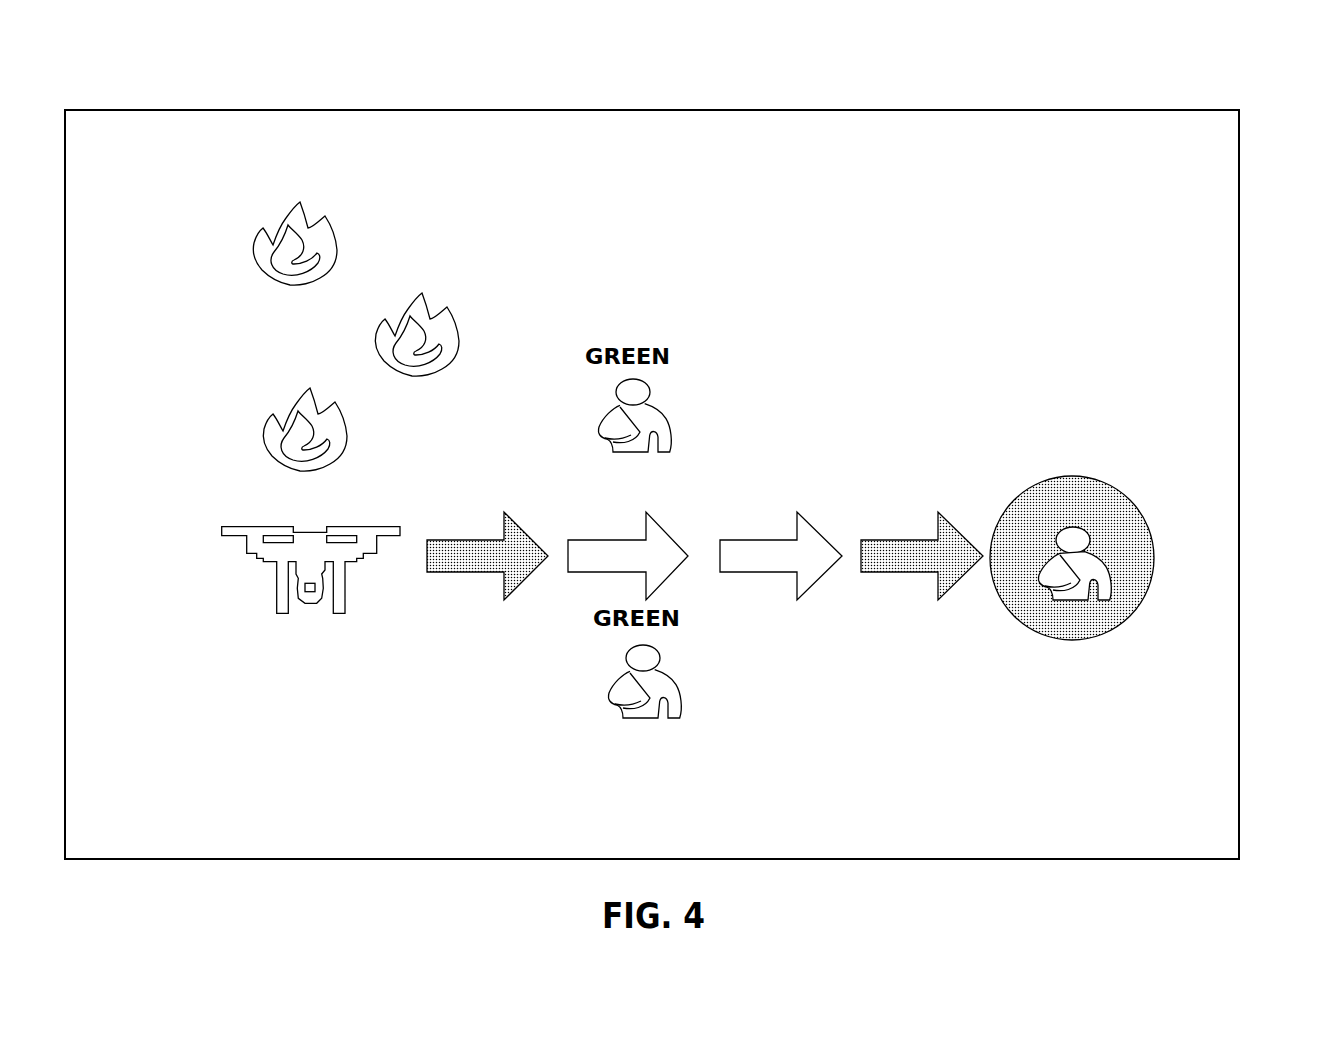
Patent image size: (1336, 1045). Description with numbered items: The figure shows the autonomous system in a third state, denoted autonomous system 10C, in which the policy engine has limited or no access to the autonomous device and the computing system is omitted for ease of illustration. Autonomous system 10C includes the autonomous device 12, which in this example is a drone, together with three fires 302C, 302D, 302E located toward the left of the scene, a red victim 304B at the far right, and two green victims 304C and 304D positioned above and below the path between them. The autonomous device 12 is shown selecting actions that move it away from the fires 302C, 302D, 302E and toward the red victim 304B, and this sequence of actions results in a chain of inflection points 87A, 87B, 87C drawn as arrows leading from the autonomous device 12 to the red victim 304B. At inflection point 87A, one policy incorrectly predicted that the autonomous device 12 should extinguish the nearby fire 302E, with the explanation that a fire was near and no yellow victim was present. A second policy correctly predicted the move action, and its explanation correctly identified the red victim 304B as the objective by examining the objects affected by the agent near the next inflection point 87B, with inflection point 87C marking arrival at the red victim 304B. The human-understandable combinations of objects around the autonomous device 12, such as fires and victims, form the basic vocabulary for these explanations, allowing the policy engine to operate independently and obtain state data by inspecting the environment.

The autonomous system 10C is at (1243, 92).
The fire 302C is at (330, 218).
The fire 302D is at (450, 309).
The fire 302E is at (338, 404).
The autonomous device 12 is at (343, 592).
The inflection point 87A is at (493, 540).
The inflection point 87B is at (927, 540).
The inflection point 87C is at (1038, 505).
The red victim 304B is at (1110, 598).
The green victim 304C is at (672, 448).
The green victim 304D is at (681, 714).